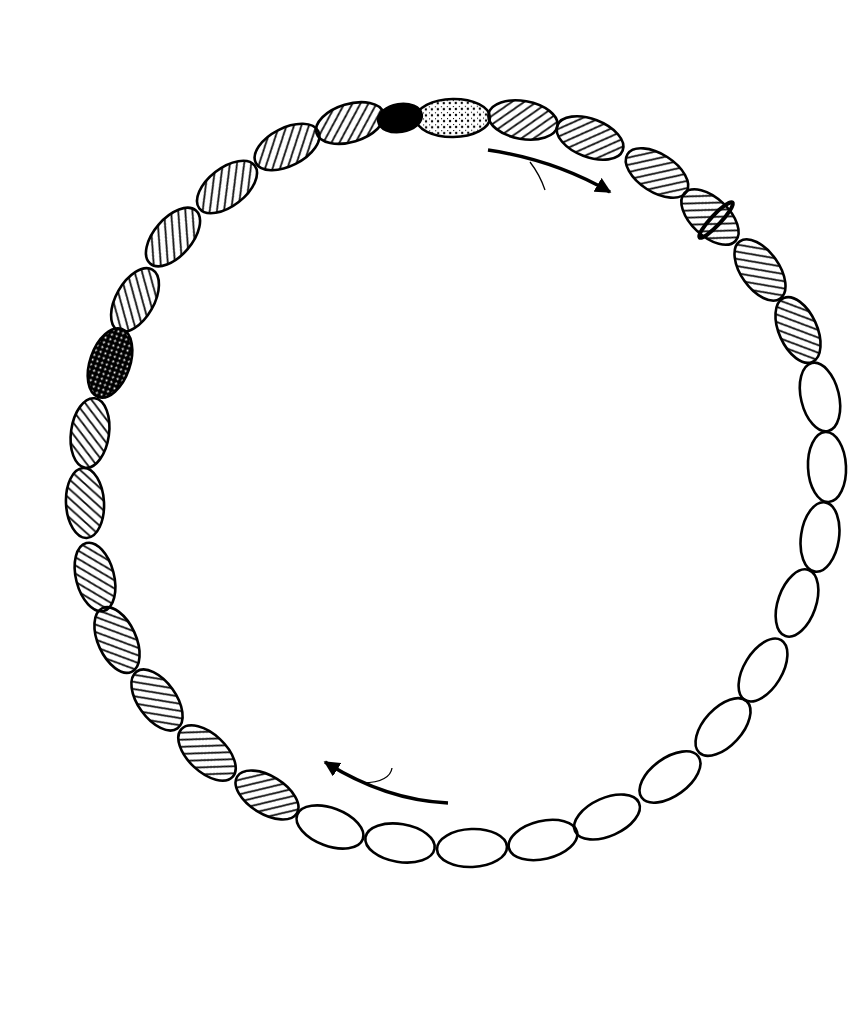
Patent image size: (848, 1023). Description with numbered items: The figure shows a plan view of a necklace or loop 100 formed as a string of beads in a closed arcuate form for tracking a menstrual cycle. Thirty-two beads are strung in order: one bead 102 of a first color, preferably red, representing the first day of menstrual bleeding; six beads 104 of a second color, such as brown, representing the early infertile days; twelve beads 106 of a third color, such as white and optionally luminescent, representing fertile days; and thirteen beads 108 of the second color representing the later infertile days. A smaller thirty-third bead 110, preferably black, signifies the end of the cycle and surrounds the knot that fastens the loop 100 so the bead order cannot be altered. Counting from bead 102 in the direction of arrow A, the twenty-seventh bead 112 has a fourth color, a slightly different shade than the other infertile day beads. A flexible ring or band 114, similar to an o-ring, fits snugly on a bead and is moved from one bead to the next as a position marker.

The necklace or loop 100 is at (195, 75).
The bead of a first color 102 is at (457, 102).
The beads of a second color 104 is at (643, 157).
The beads of a third color 106 is at (507, 850).
The beads of the second color 108 is at (130, 262).
The thirty-third bead 110 is at (398, 108).
The 27th bead 112 is at (134, 364).
The ring or band 114 is at (700, 244).